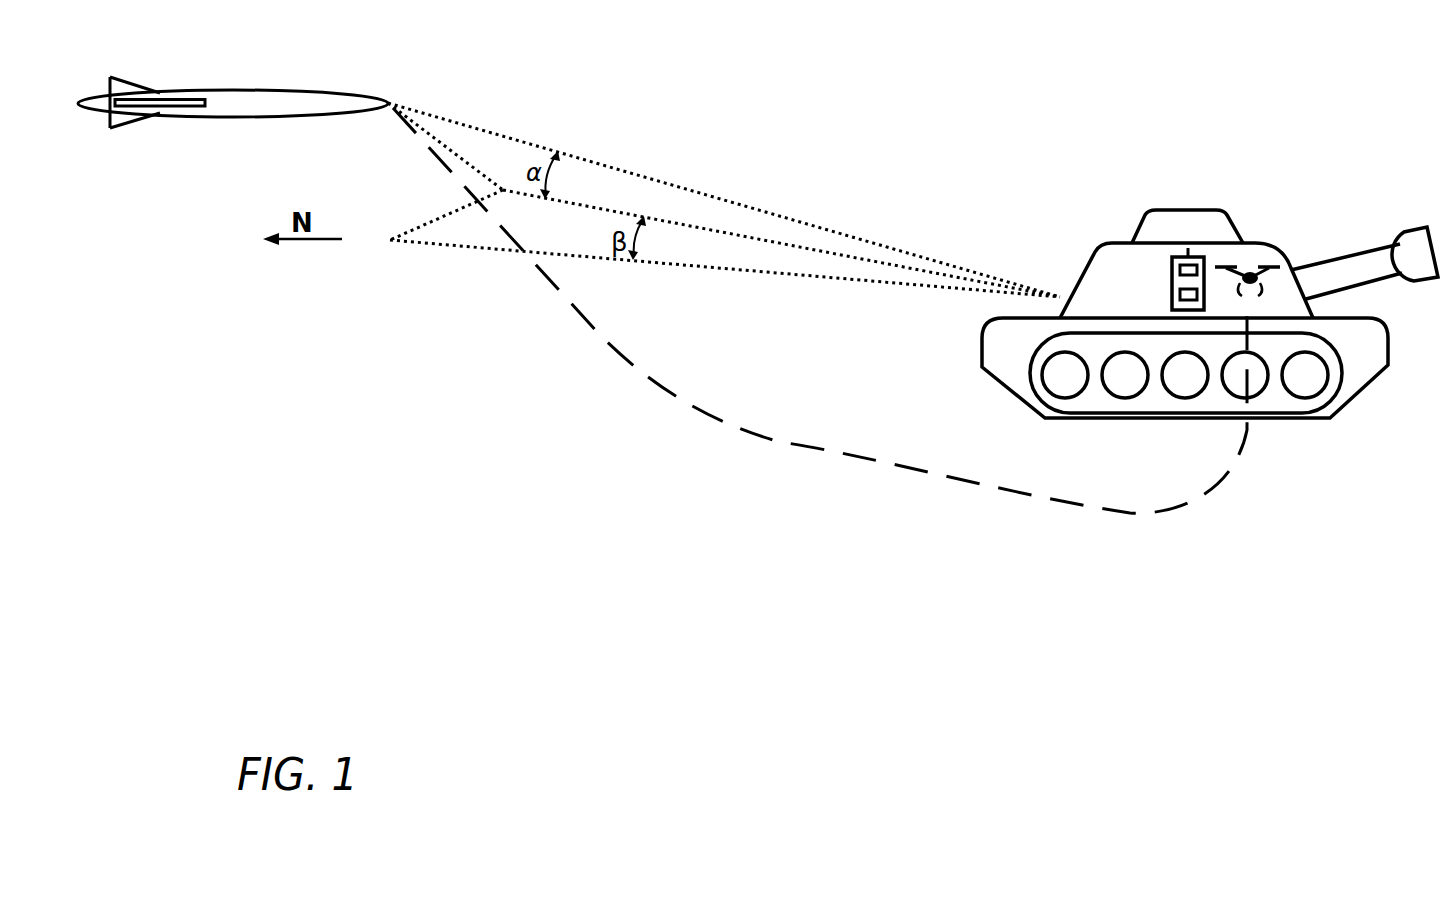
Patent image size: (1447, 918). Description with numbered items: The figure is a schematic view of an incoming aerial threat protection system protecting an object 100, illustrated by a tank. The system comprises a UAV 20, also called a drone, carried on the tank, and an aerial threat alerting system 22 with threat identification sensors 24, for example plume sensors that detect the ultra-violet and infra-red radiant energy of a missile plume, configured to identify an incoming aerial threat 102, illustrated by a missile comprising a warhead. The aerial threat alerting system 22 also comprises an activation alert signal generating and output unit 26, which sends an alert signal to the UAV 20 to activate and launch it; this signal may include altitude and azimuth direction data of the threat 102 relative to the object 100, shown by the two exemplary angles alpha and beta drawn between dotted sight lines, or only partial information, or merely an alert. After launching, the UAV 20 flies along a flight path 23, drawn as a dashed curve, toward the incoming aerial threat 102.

The incoming aerial threat 102 is at (262, 91).
The UAV 20 is at (1210, 284).
The object 100 is at (1268, 241).
The aerial threat alerting system 22 is at (1170, 257).
The threat identification sensors 24 is at (1198, 262).
The activation alert signal generating and output unit 26 is at (1183, 310).
The flight path 23 is at (866, 457).